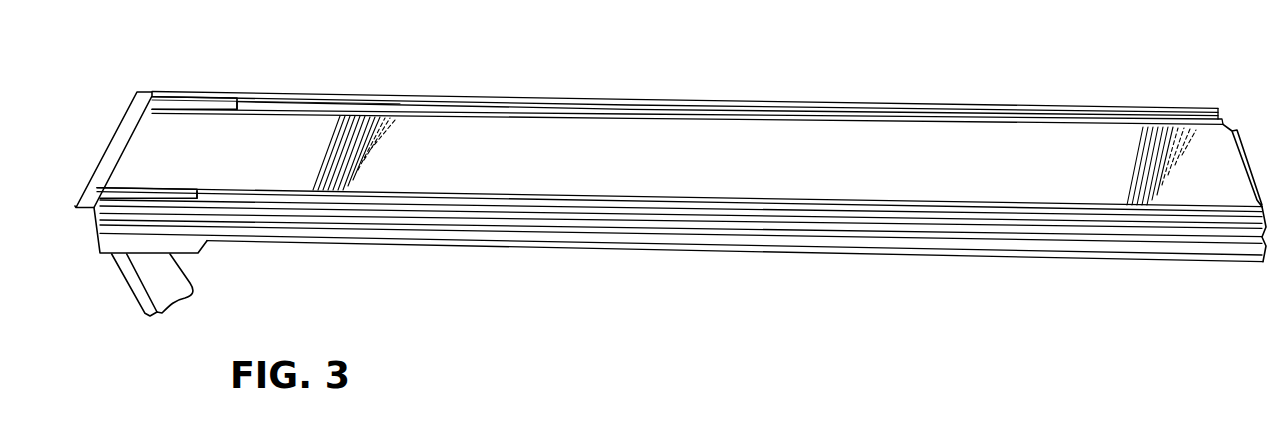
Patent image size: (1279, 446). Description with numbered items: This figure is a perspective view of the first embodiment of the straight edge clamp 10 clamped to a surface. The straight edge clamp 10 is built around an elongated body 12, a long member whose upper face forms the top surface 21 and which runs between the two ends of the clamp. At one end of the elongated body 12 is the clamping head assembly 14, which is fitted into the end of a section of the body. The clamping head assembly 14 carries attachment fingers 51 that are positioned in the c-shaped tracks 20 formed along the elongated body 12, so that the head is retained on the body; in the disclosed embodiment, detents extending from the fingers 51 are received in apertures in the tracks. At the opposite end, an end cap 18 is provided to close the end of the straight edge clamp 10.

The straight edge clamp 10 is at (279, 128).
The elongated body 12 is at (815, 137).
The clamping head assembly 14 is at (136, 292).
The end cap 18 is at (1247, 181).
The c-shaped tracks 20 is at (488, 108).
The top surface 21 is at (1020, 175).
The attachment fingers 51 is at (190, 101).